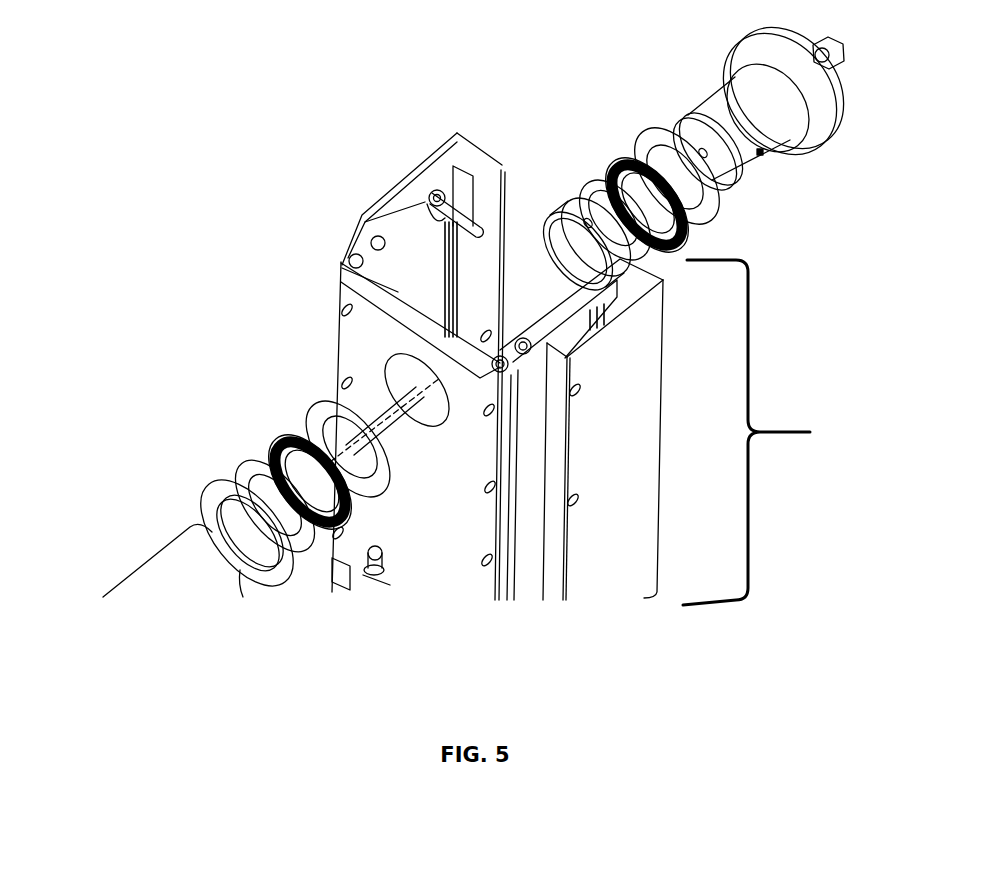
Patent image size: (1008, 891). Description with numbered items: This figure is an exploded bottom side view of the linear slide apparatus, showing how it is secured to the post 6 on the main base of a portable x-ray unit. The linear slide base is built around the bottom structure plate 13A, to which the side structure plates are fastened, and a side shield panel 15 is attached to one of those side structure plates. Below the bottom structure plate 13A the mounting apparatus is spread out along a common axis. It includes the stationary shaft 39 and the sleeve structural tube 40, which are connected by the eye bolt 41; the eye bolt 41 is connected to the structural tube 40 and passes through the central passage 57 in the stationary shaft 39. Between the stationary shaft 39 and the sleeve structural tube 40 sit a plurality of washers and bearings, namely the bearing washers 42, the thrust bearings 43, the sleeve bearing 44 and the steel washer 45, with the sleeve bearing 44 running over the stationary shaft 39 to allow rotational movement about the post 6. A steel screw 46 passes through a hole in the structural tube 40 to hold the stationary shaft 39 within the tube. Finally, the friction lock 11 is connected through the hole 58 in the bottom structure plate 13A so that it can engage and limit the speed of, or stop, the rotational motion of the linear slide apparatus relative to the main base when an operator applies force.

The post 6 is at (760, 432).
The friction lock 11 is at (420, 200).
The bottom structure plate 13A is at (343, 322).
The side shield panel 15 is at (620, 597).
The stationary shaft 39 is at (775, 149).
The sleeve structural tube 40 is at (203, 597).
The eye bolt 41 is at (402, 412).
The bearing washers 42 is at (307, 418).
The thrust bearings 43 is at (353, 506).
The sleeve bearing 44 is at (560, 207).
The steel washer 45 is at (287, 587).
The steel screw 46 is at (373, 580).
The central passage 57 is at (697, 147).
The hole 58 is at (428, 321).